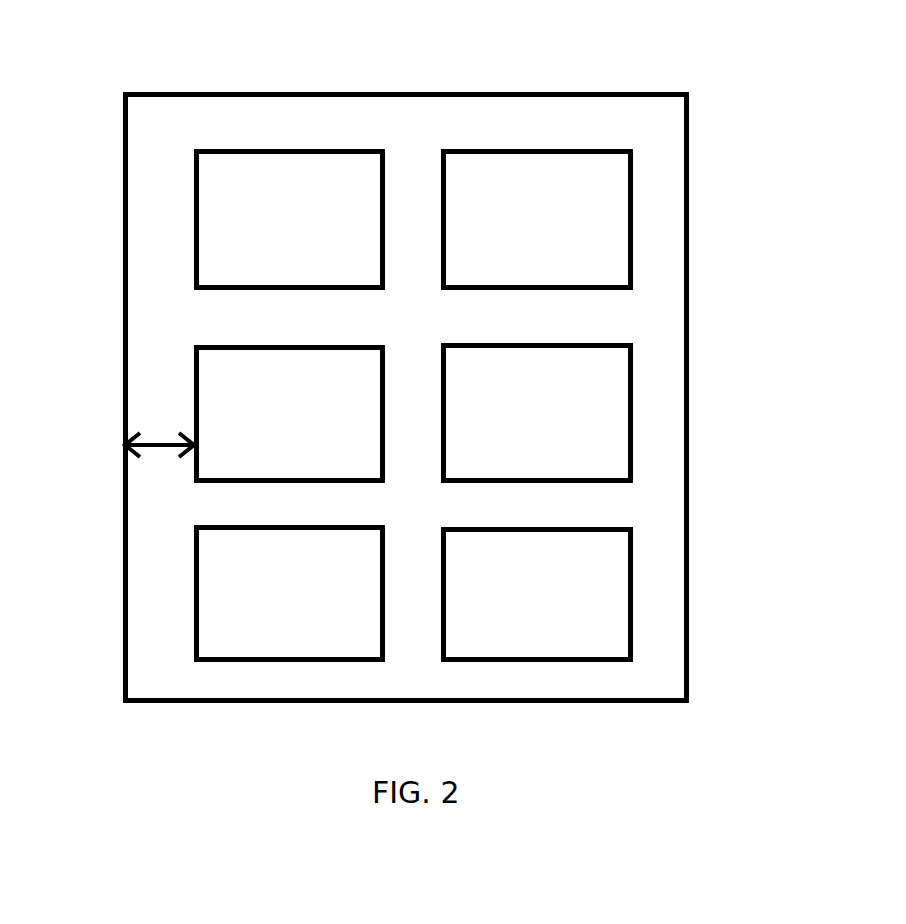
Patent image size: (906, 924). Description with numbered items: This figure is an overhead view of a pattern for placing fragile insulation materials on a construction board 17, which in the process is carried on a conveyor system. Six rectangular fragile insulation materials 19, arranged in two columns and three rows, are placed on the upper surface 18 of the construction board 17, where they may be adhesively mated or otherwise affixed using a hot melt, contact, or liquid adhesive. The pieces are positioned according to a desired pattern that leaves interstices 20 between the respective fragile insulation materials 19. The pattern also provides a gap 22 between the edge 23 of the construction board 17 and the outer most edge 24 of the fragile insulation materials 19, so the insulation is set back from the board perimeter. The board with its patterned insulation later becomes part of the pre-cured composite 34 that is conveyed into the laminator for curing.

The construction board 17 is at (692, 237).
The upper surface 18 is at (152, 133).
The fragile insulation materials 19 is at (577, 427).
The interstices 20 is at (410, 160).
The gap 22 is at (163, 448).
The edge 23 is at (120, 642).
The outer most edge 24 is at (192, 373).
The pre-cured composite 34 is at (630, 160).